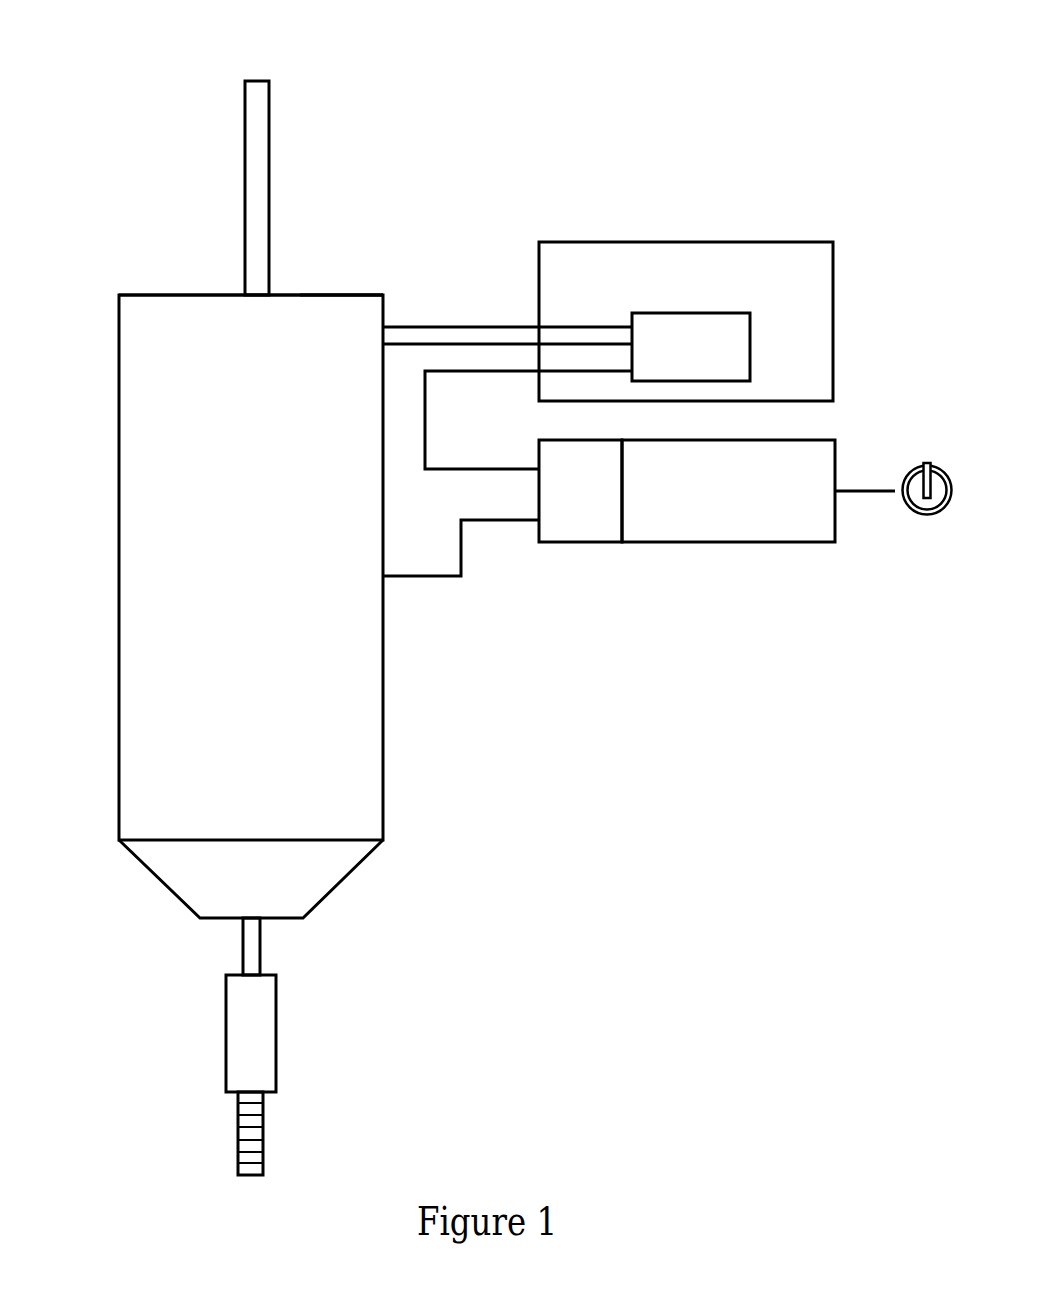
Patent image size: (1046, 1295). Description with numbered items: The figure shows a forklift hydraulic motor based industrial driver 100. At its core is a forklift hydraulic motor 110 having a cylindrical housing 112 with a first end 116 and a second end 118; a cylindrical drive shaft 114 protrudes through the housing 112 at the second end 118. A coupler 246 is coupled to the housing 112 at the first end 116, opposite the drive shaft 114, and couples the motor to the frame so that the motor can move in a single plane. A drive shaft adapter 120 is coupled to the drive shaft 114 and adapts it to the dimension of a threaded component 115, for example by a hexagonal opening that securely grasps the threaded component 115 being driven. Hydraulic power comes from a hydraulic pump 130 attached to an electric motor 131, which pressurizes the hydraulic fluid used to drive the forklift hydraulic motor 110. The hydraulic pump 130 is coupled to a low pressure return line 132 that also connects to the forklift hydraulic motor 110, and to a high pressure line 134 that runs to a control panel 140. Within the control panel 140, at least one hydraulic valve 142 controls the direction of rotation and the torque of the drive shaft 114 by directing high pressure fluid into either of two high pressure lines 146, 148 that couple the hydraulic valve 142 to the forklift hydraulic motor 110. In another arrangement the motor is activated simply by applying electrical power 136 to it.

The industrial driver 100 is at (178, 50).
The forklift hydraulic motor 110 is at (115, 331).
The housing 112 is at (164, 295).
The drive shaft 114 is at (260, 951).
The threaded component 115 is at (238, 1132).
The first end 116 is at (345, 295).
The second end 118 is at (200, 920).
The drive shaft adapter 120 is at (226, 1057).
The hydraulic pump 130 is at (583, 543).
The electric motor 131 is at (682, 543).
The low pressure return line 132 is at (483, 469).
The high pressure line 134 is at (463, 563).
The electrical power 136 is at (925, 461).
The control panel 140 is at (687, 242).
The hydraulic valve 142 is at (690, 313).
The high pressure line 146 is at (420, 342).
The upper conduit 148 is at (457, 327).
The coupler 246 is at (245, 205).